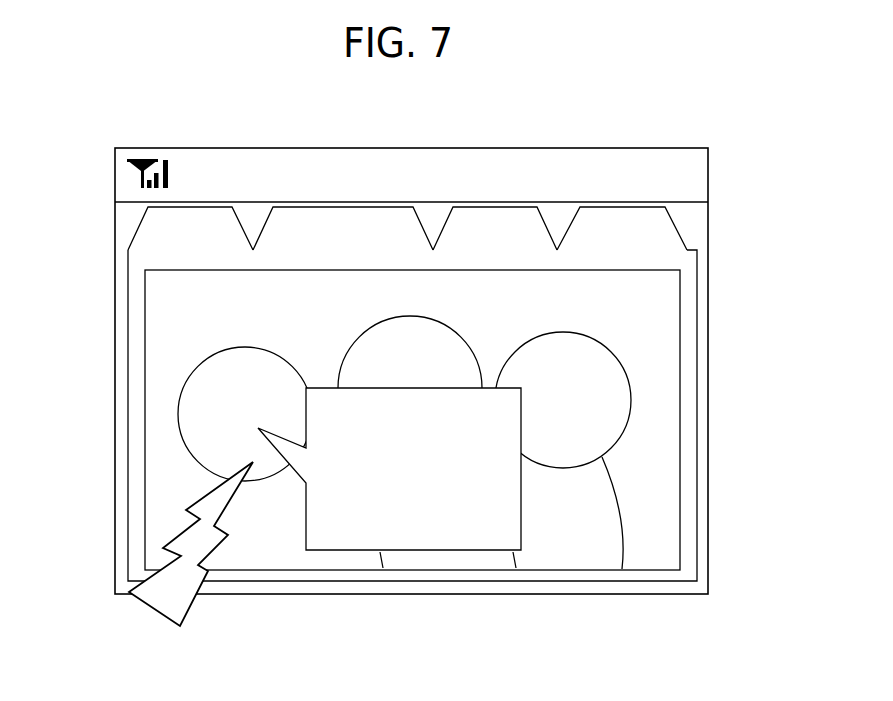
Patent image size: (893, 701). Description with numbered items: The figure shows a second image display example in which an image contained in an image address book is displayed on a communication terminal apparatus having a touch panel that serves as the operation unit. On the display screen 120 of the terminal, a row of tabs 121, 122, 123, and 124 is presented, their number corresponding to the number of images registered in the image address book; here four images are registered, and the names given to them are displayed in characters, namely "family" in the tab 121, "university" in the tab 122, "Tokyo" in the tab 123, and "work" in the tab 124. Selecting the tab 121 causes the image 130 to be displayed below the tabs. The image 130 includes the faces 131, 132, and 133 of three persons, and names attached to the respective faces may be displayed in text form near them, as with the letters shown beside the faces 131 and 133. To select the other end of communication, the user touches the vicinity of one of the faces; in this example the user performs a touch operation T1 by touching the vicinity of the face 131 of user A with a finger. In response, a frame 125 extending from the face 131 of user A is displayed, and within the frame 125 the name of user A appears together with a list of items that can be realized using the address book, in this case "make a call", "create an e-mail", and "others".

The display screen 120 is at (708, 282).
The tab 121 is at (208, 210).
The tab 122 is at (372, 212).
The tab 123 is at (505, 213).
The tab 124 is at (665, 220).
The frame 125 is at (454, 530).
The image 130 is at (680, 383).
The face 131 is at (228, 355).
The face 132 is at (375, 340).
The face 133 is at (593, 350).
The touch operation T1 is at (192, 538).